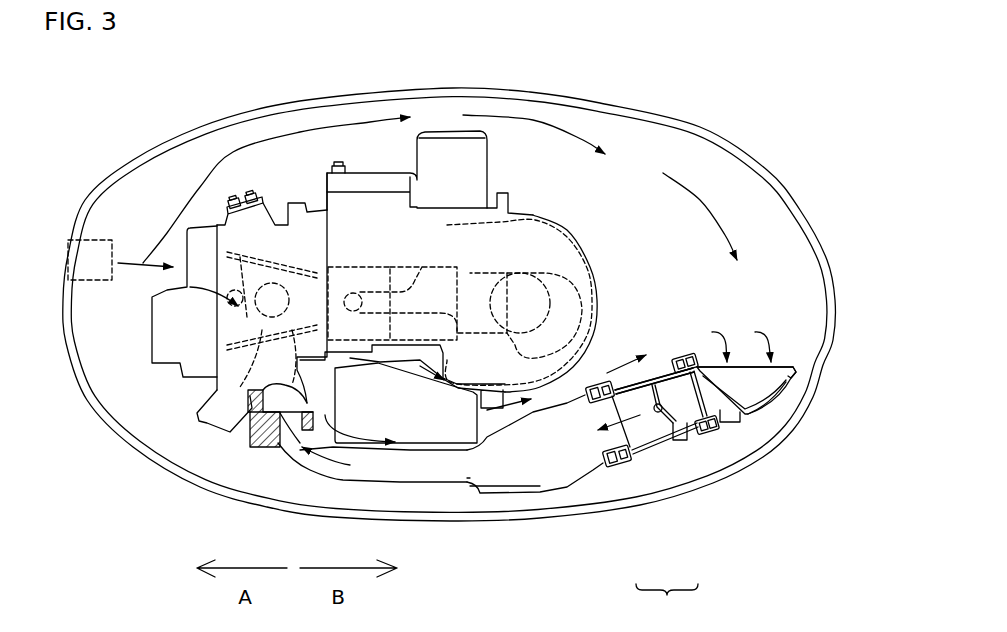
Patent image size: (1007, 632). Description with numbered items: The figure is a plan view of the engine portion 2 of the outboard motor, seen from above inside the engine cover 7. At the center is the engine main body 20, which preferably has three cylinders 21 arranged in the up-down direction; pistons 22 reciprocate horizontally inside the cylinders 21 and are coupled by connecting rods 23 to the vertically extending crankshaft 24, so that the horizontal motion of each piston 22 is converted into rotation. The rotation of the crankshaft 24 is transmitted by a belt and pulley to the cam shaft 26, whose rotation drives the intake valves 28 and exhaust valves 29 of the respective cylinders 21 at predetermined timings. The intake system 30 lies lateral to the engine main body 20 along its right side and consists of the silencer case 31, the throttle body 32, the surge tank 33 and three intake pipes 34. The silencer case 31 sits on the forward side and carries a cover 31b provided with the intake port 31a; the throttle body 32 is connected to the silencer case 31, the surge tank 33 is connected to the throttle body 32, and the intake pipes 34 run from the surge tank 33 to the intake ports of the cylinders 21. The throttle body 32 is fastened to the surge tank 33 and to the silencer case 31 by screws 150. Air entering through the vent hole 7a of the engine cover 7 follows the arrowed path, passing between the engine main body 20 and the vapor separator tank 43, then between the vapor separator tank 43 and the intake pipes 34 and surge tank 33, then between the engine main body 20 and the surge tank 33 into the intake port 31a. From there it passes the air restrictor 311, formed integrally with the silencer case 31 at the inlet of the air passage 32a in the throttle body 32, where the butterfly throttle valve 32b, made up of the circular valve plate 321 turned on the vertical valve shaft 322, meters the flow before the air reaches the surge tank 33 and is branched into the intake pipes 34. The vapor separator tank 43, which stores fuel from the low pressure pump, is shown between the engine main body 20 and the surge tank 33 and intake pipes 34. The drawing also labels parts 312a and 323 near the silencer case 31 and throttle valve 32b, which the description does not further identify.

The engine portion 2 is at (590, 186).
The engine cover 7 is at (458, 88).
The vent hole 7a is at (92, 277).
The engine main body 20 is at (596, 255).
The cylinders 21 is at (395, 270).
The pistons 22 is at (405, 272).
The connecting rods 23 is at (425, 290).
The crankshaft 24 is at (522, 270).
The cam shaft 26 is at (282, 277).
The intake valves 28 is at (255, 415).
The exhaust valves 29 is at (255, 300).
The intake system 30 is at (470, 500).
The silencer case 31 is at (728, 420).
The intake port 31a is at (742, 365).
The cover 31b is at (742, 424).
The air restrictor 311 is at (792, 400).
The inclined bottom wall 312a is at (758, 418).
The throttle body 32 is at (660, 378).
The air passage 32a is at (694, 368).
The butterfly throttle valve 32b is at (667, 600).
The valve plate 321 is at (646, 395).
The valve shaft 322 is at (664, 425).
The bracket 323 is at (672, 445).
The surge tank 33 is at (545, 494).
The intake pipes 34 is at (380, 483).
The vapor separator tank 43 is at (428, 445).
The screws 150 is at (605, 382).